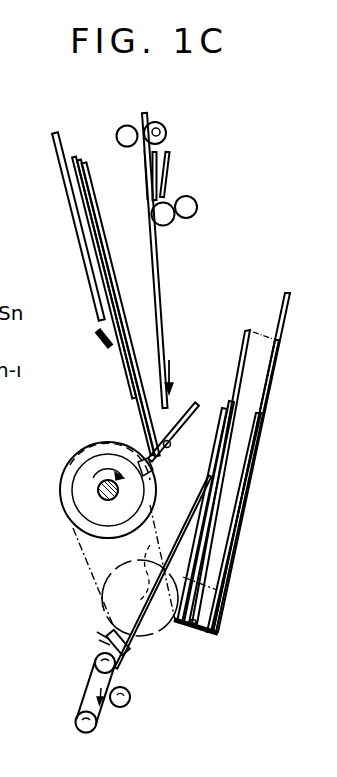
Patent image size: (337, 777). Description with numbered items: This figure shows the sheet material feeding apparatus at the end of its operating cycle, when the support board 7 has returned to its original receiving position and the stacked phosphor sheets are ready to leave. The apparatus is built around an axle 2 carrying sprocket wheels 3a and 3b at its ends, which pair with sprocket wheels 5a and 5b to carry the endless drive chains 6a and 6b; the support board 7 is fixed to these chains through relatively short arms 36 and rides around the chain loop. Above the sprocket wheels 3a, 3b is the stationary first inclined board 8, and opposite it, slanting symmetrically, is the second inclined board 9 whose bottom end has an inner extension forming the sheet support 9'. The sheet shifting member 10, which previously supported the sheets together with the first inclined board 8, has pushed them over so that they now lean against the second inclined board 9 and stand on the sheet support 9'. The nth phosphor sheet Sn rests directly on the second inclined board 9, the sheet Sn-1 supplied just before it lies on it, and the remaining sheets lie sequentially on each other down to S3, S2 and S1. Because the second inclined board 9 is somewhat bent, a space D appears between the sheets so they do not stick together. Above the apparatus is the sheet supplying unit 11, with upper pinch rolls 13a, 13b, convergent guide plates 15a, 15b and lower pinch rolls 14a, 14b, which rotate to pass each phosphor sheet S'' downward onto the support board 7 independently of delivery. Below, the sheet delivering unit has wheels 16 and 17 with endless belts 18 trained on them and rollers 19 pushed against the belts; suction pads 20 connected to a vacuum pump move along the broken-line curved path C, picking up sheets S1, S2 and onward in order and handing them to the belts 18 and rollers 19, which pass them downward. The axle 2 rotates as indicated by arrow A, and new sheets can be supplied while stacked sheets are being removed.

The axle 2 is at (103, 492).
The sprocket wheel 3a is at (56, 573).
The sprocket wheel 3b is at (82, 536).
The sprocket wheel 5a is at (54, 600).
The sprocket wheel 5b is at (100, 588).
The endless drive chain 6a is at (87, 562).
The endless drive chain 6b is at (84, 550).
The support board 7 is at (196, 407).
The first inclined board 8 is at (68, 200).
The second inclined board 9 is at (219, 606).
The sheet support 9' is at (179, 654).
The sheet shifting member 10 is at (112, 365).
The sheet supplying unit 11 is at (183, 187).
The upper pinch roll 13a is at (118, 132).
The upper pinch roll 13b is at (167, 130).
The lower pinch roll 14a is at (170, 226).
The lower pinch roll 14b is at (196, 208).
The convergent guide plate 15a is at (148, 162).
The convergent guide plate 15b is at (172, 157).
The wheel 16 is at (95, 660).
The wheel 17 is at (75, 724).
The endless belt 18 is at (80, 688).
The roller 19 is at (130, 698).
The suction pad 20 is at (108, 642).
The short arm 36 is at (162, 452).
The rotation direction A is at (102, 477).
The curved path C is at (159, 587).
The space D is at (222, 474).
The sheet S'' is at (174, 260).
The phosphor sheet S1 is at (224, 433).
The phosphor sheet S2 is at (227, 408).
The phosphor sheet S3 is at (244, 338).
The nth phosphor sheet Sn is at (268, 404).
The (n-1)th phosphor sheet Sn-1 is at (263, 435).